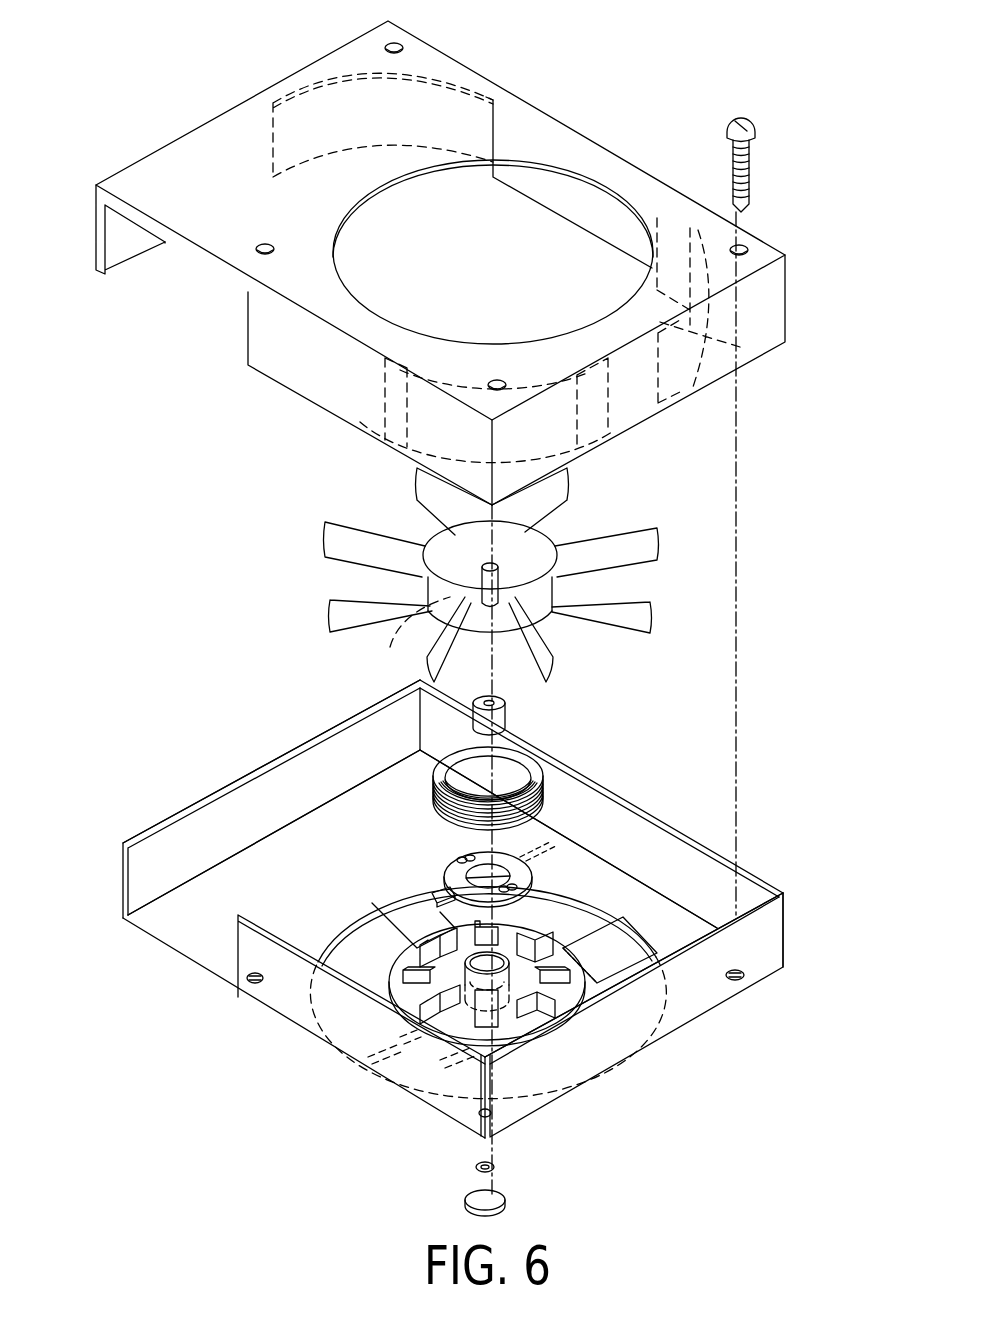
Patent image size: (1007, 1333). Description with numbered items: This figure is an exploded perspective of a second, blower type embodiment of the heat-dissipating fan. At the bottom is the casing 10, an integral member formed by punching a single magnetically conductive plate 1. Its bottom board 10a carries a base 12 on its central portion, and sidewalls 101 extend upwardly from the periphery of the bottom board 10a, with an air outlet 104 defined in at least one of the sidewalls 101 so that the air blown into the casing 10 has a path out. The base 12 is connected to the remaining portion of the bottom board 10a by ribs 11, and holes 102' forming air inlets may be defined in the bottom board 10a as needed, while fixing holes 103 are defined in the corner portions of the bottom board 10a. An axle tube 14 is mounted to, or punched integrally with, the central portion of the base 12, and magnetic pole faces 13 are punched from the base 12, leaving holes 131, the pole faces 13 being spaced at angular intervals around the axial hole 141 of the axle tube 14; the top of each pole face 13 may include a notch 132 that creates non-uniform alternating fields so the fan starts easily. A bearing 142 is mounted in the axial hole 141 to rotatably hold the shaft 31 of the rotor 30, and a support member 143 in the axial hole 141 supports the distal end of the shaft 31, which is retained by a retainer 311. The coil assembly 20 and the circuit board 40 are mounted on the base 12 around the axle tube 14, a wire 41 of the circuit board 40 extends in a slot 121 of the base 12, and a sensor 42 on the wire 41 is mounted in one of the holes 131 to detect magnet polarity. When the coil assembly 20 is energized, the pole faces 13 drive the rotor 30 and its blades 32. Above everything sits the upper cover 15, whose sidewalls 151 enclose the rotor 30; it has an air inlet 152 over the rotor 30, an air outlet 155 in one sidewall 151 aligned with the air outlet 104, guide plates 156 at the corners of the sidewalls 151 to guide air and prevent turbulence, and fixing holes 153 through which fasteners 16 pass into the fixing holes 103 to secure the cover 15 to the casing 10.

The magnetically conductive plate 1 is at (411, 924).
The casing 10 is at (320, 1060).
The bottom board 10a is at (690, 912).
The ribs 11 is at (605, 913).
The base 12 is at (578, 1032).
The magnetic pole faces 13 is at (550, 1017).
The notch 132 is at (547, 1020).
The axle tube 14 is at (492, 1035).
The axial hole 141 is at (496, 1113).
The bearing 142 is at (507, 717).
The support member 143 is at (466, 1195).
The upper cover 15 is at (549, 104).
The sidewalls 151 is at (742, 318).
The air inlet 152 is at (542, 192).
The fixing holes 153 is at (747, 247).
The air outlet 155 is at (195, 285).
The guide plate 156 is at (340, 115).
The fasteners 16 is at (748, 163).
The coil assembly 20 is at (532, 765).
The rotor 30 is at (502, 831).
The shaft 31 is at (393, 647).
The retainer 311 is at (494, 1165).
The blades 32 is at (572, 530).
The circuit board 40 is at (436, 792).
The wire 41 is at (455, 870).
The sensor 42 is at (435, 895).
The sidewalls 101 is at (210, 820).
The holes 102' is at (351, 990).
The fixing holes 103 is at (245, 978).
The air outlet 104 is at (150, 918).
The slot 121 is at (415, 1020).
The holes 131 is at (403, 1007).